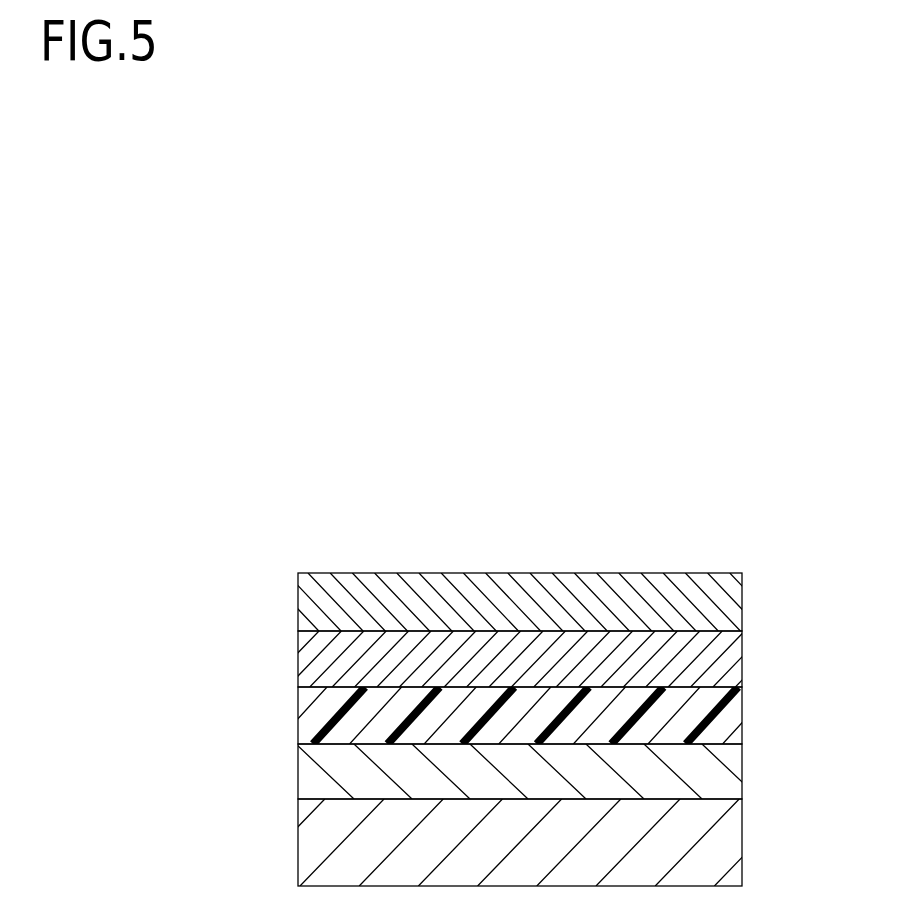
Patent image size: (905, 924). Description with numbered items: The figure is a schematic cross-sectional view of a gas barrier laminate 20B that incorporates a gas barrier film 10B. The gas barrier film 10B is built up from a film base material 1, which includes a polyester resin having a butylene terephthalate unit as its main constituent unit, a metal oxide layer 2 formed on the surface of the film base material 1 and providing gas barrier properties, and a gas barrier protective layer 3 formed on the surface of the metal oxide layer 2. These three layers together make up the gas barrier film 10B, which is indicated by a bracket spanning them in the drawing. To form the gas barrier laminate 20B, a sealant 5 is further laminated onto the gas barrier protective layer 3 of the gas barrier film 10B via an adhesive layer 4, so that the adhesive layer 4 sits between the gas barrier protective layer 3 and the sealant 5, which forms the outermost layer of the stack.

The gas barrier laminate 20B is at (742, 522).
The gas barrier film 10B is at (790, 695).
The film base material 1 is at (732, 835).
The metal oxide layer 2 is at (732, 759).
The gas barrier protective layer 3 is at (732, 706).
The adhesive layer 4 is at (732, 646).
The sealant 5 is at (732, 589).